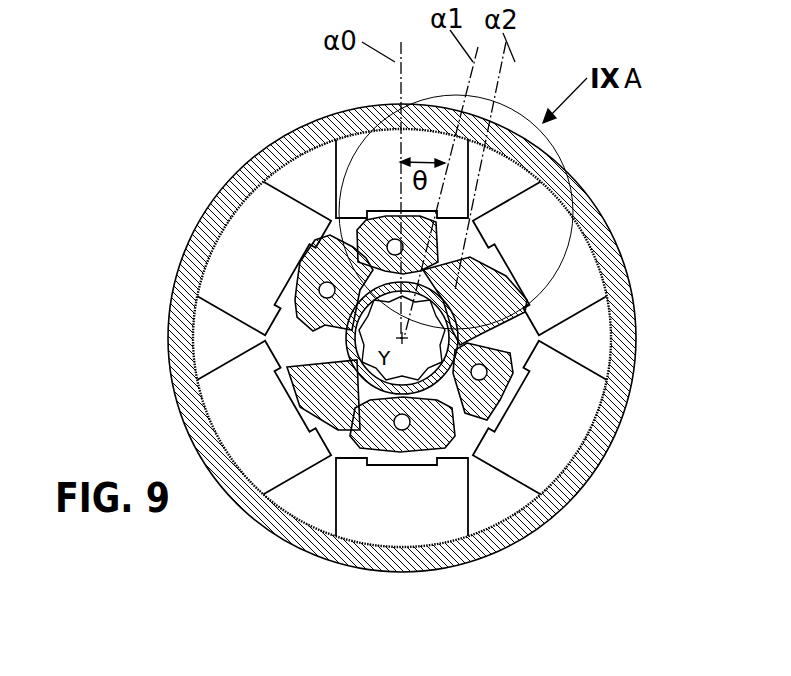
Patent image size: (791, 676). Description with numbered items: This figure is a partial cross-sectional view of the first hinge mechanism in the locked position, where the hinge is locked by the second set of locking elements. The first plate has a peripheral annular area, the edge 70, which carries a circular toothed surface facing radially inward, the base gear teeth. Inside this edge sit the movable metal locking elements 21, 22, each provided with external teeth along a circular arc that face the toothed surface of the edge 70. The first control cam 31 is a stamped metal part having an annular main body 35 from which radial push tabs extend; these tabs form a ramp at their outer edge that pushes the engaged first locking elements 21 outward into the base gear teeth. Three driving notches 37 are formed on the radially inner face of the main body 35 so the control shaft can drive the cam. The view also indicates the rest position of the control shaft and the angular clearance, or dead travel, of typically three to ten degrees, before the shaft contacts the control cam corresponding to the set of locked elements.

The first locking elements 21 is at (242, 265).
The second locking elements 22 is at (545, 440).
The first control cam 31 is at (540, 307).
The annular main body 35 is at (445, 420).
The driving notches 37 is at (497, 430).
The edge 70 is at (322, 545).